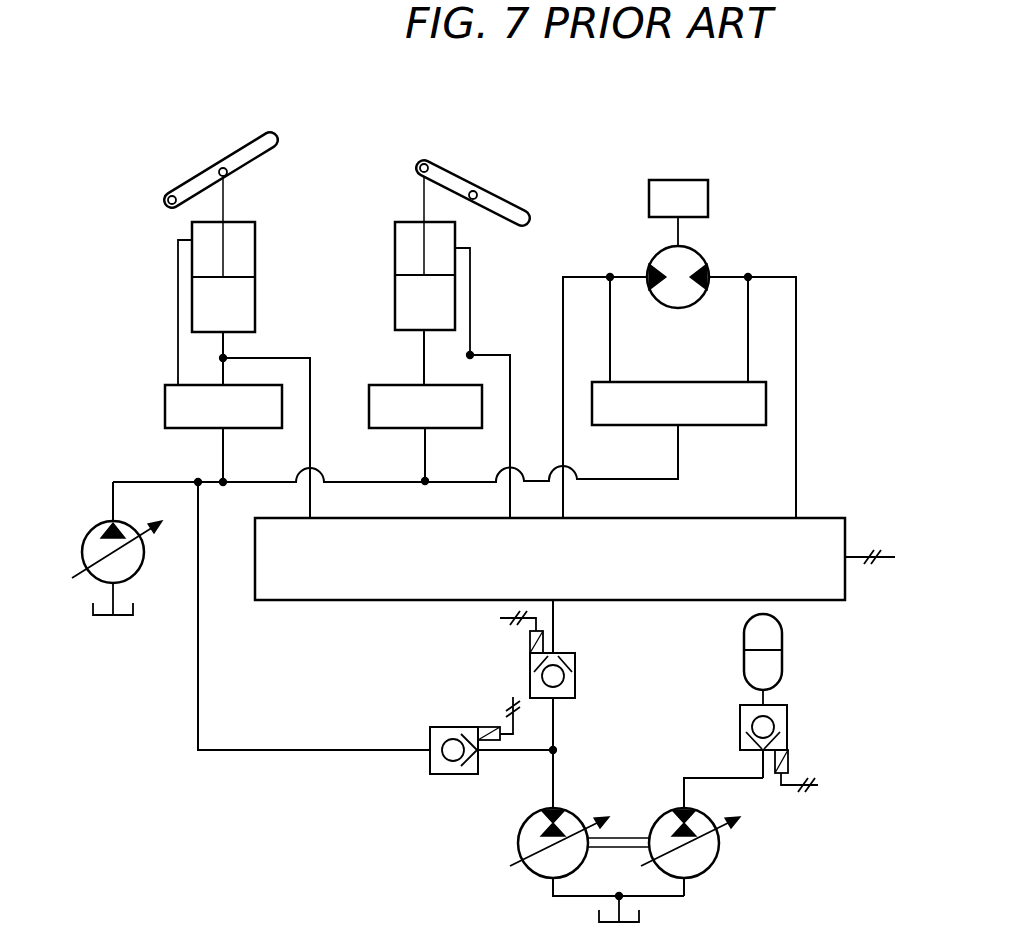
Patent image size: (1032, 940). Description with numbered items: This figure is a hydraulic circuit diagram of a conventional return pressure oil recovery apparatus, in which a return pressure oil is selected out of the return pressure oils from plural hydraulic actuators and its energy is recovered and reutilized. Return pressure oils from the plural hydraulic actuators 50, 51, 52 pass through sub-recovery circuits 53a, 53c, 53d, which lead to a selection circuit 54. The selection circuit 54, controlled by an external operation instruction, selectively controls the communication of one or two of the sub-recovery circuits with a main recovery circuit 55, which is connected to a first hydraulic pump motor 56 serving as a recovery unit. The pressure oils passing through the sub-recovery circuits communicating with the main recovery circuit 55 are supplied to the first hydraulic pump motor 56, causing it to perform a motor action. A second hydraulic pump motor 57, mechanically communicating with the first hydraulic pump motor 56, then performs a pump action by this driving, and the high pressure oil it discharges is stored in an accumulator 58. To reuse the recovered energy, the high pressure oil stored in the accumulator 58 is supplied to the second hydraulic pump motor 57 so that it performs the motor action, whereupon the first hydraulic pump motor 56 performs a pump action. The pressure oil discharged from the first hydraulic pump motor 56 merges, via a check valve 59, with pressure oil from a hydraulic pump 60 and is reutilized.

The hydraulic actuator 50 is at (255, 222).
The hydraulic actuator 51 is at (395, 243).
The hydraulic actuator 52 is at (655, 253).
The sub-recovery circuit 53a is at (310, 372).
The sub-recovery circuit 53c is at (563, 282).
The sub-recovery circuit 53d is at (510, 372).
The selection circuit 54 is at (822, 518).
The main recovery circuit 55 is at (560, 632).
The first hydraulic pump motor 56 is at (518, 843).
The second hydraulic pump motor 57 is at (720, 843).
The accumulator 58 is at (782, 648).
The check valve 59 is at (447, 727).
The hydraulic pump 60 is at (90, 528).